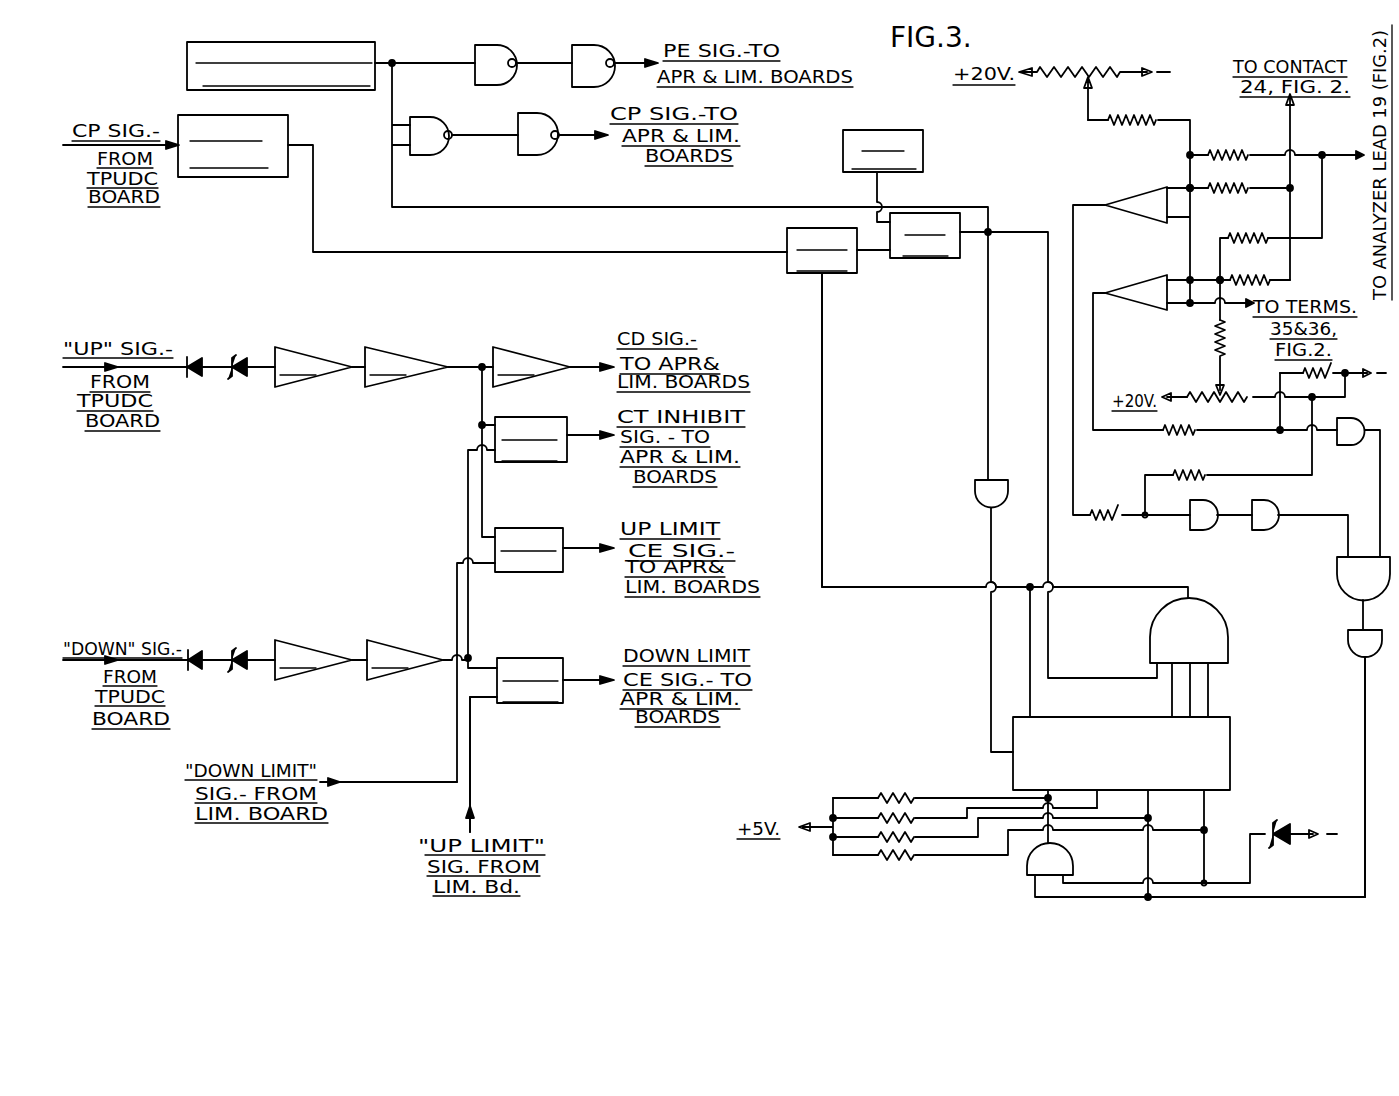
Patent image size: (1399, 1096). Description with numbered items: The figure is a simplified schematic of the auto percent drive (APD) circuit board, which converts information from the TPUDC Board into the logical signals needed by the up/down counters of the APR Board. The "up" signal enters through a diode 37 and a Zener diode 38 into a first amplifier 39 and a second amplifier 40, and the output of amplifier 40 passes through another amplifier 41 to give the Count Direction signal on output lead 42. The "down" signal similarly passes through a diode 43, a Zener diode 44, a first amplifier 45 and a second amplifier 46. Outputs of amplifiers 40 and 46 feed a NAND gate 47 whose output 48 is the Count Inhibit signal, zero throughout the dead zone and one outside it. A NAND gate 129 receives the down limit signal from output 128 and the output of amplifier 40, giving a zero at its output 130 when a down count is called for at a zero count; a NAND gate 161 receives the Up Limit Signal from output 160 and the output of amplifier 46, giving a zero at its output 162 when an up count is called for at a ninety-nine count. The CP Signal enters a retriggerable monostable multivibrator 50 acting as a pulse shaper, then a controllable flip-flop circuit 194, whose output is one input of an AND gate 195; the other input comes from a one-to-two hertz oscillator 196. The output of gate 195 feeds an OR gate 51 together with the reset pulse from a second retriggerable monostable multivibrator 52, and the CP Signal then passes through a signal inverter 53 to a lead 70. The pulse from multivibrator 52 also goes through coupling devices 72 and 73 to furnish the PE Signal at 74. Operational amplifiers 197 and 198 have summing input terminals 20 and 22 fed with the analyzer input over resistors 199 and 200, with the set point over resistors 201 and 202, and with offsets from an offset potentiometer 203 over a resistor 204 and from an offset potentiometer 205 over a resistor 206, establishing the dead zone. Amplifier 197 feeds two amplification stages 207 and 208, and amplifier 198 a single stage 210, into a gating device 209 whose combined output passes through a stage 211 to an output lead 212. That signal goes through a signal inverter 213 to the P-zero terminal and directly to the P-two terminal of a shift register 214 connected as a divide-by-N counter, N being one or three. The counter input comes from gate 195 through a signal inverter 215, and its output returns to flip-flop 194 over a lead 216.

The retriggerable monostable multivibrator 52 is at (187, 50).
The retriggerable monostable multivibrator 50 is at (260, 178).
The OR gate 51 is at (422, 117).
The signal inverter 53 is at (518, 150).
The lead 70 is at (580, 138).
The coupling device 72 is at (475, 50).
The coupling device 73 is at (572, 48).
The PE Signal output 74 is at (625, 62).
The oscillator 196 is at (923, 148).
The AND gate 195 is at (937, 258).
The controllable flip-flop circuit 194 is at (787, 271).
The offset potentiometer 203 is at (1097, 70).
The resistor 204 is at (1128, 123).
The resistor 199 is at (1232, 152).
The resistor 201 is at (1230, 187).
The summing input terminal 20 is at (1190, 188).
The operational amplifier 197 is at (1140, 210).
The operational amplifier 198 is at (1138, 287).
The summing input terminal 22 is at (1220, 278).
The resistor 200 is at (1245, 238).
The resistor 202 is at (1243, 278).
The resistor 206 is at (1215, 338).
The offset potentiometer 205 is at (1210, 400).
The amplification stage 210 is at (1352, 445).
The amplification stage 207 is at (1190, 528).
The amplification stage 208 is at (1265, 530).
The gating device 209 is at (1341, 580).
The amplification stage 211 is at (1348, 648).
The output lead 212 is at (1365, 722).
The signal inverter 215 is at (975, 488).
The lead 216 is at (823, 463).
The shift register 214 is at (1232, 753).
The signal inverter 213 is at (1027, 865).
The diode 37 is at (190, 357).
The Zener diode 38 is at (238, 380).
The first amplifier 39 is at (303, 345).
The second amplifier 40 is at (393, 347).
The amplifier 41 is at (513, 347).
The output lead 42 is at (587, 365).
The NAND gate 47 is at (548, 462).
The output 48 is at (583, 434).
The NAND gate 129 is at (540, 528).
The output 130 is at (582, 551).
The down limit signal output 128 is at (392, 781).
The Up Limit Signal output 160 is at (470, 782).
The diode 43 is at (192, 650).
The Zener diode 44 is at (238, 673).
The first amplifier 45 is at (300, 640).
The second amplifier 46 is at (393, 640).
The NAND gate 161 is at (520, 658).
The output 162 is at (578, 678).